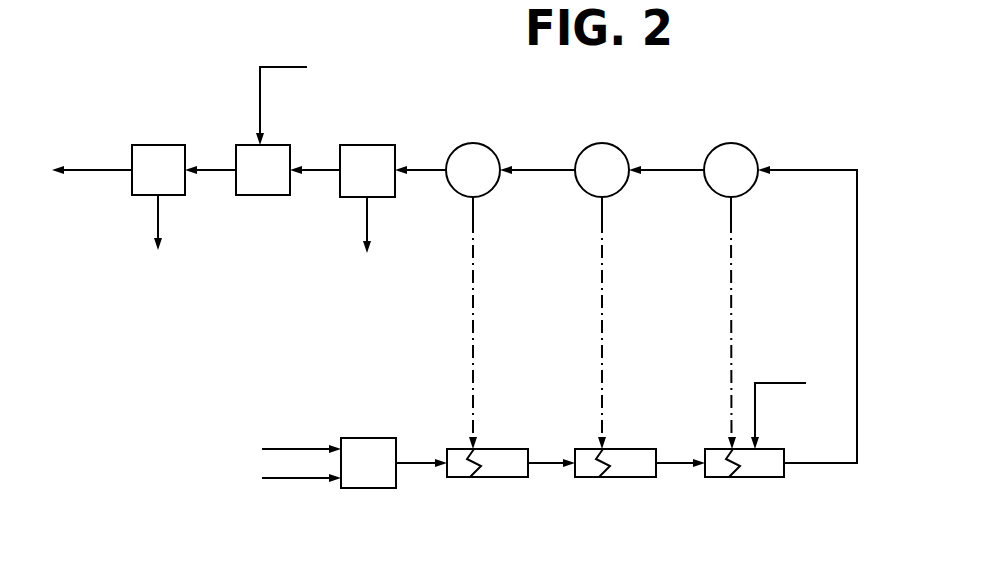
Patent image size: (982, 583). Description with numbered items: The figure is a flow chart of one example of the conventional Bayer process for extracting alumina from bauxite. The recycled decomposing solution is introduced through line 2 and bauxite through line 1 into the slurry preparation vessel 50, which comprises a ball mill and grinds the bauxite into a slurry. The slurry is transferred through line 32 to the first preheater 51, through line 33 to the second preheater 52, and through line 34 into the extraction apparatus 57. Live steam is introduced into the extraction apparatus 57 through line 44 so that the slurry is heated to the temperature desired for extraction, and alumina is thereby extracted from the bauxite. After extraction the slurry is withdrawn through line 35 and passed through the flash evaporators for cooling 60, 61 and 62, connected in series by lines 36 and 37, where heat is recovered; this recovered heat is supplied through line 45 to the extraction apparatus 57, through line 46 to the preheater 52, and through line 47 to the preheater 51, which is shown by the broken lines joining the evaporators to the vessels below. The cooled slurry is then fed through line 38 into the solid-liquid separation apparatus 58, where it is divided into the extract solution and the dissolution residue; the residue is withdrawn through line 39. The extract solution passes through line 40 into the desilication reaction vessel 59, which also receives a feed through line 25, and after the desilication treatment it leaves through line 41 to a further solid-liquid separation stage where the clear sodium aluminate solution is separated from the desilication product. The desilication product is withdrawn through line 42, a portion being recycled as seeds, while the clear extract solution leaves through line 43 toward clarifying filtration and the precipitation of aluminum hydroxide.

The bauxite stream 1 is at (293, 476).
The recycled decomposing solution stream 2 is at (292, 446).
The line 25 is at (281, 90).
The line 32 is at (421, 448).
The line 33 is at (551, 448).
The line 34 is at (680, 448).
The line 35 is at (807, 300).
The line 36 is at (666, 156).
The line 37 is at (537, 156).
The line 38 is at (420, 156).
The line 39 is at (370, 243).
The line 40 is at (315, 156).
The line 41 is at (210, 156).
The line 42 is at (158, 243).
The line 43 is at (92, 156).
The line 44 is at (778, 398).
The line 45 is at (752, 323).
The line 46 is at (623, 323).
The line 47 is at (494, 323).
The slurry-preparation vessel 50 is at (368, 482).
The preheater 51 is at (487, 481).
The preheater 52 is at (615, 481).
The extraction apparatus 57 is at (744, 481).
The solid-liquid separation apparatus 58 is at (367, 153).
The desilication reaction vessel 59 is at (263, 189).
The flash evaporator for cooling 60 is at (731, 153).
The flash evaporator for cooling 61 is at (602, 153).
The flash evaporator for cooling 62 is at (473, 153).